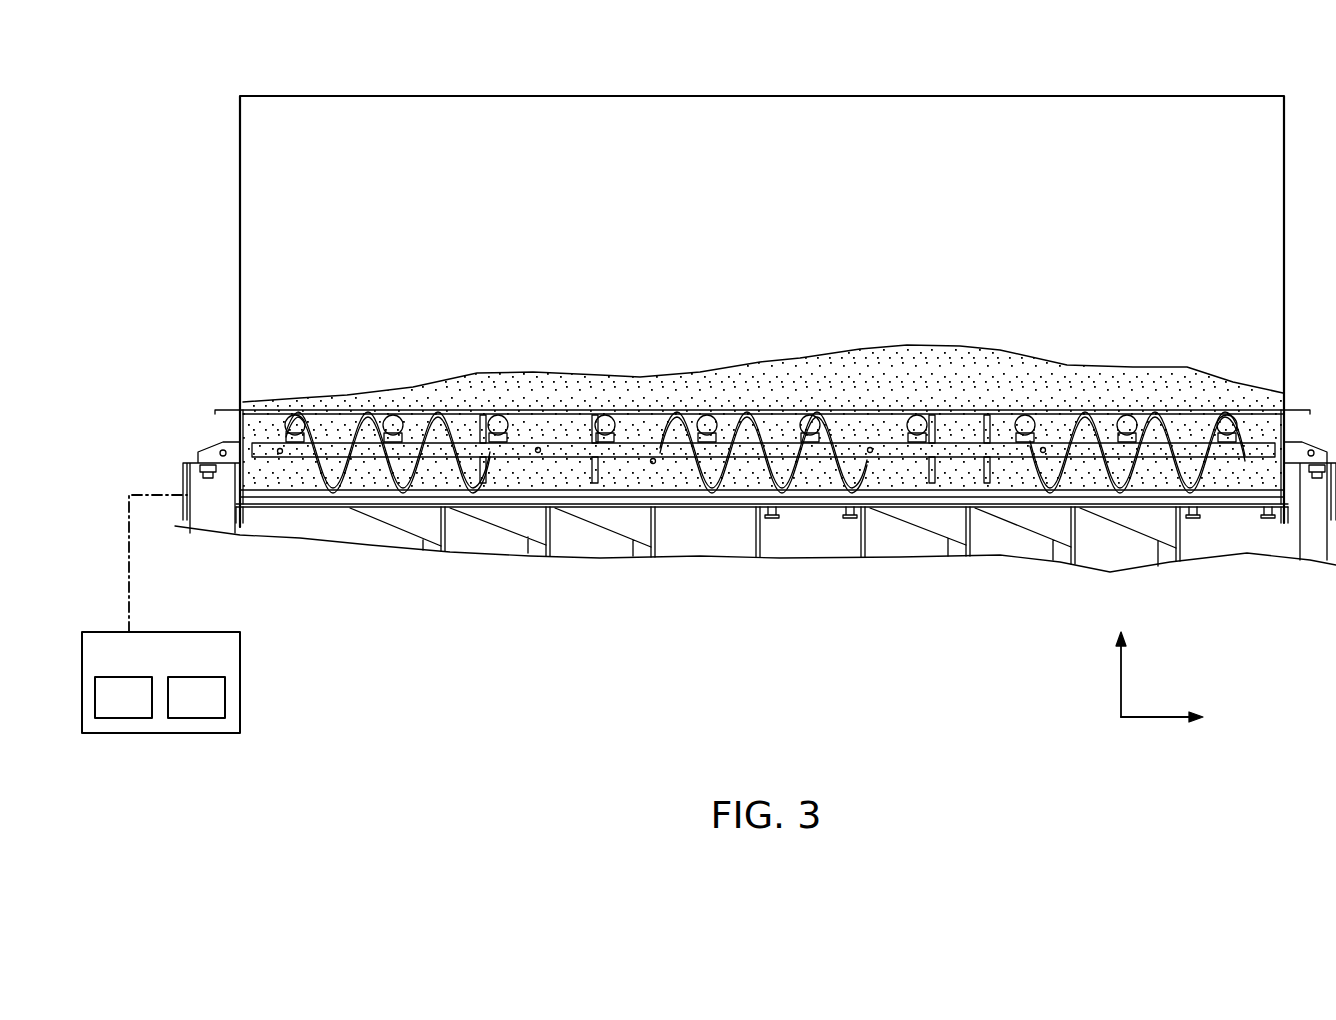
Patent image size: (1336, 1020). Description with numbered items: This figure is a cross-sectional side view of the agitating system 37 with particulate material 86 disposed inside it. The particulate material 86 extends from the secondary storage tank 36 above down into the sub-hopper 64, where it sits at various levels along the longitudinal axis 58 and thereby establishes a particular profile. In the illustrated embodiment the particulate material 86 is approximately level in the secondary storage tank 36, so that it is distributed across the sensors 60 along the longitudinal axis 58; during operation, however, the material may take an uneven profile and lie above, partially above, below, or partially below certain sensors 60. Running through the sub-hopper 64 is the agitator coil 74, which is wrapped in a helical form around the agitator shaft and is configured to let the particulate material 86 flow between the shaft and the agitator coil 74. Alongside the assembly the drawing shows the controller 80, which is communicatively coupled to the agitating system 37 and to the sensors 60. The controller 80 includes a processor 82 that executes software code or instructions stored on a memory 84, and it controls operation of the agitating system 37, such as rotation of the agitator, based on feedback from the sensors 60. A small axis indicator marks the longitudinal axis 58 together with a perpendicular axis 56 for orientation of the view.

The secondary storage tank 36 is at (240, 304).
The agitating system 37 is at (665, 314).
The particulate material 86 is at (905, 345).
The sensors 60 is at (292, 424).
The agitator coil 74 is at (835, 462).
The sub-hopper 64 is at (236, 477).
The controller 80 is at (108, 632).
The processor 82 is at (123, 722).
The memory 84 is at (200, 722).
The vertical axis 56 is at (1122, 690).
The longitudinal axis 58 is at (1145, 717).